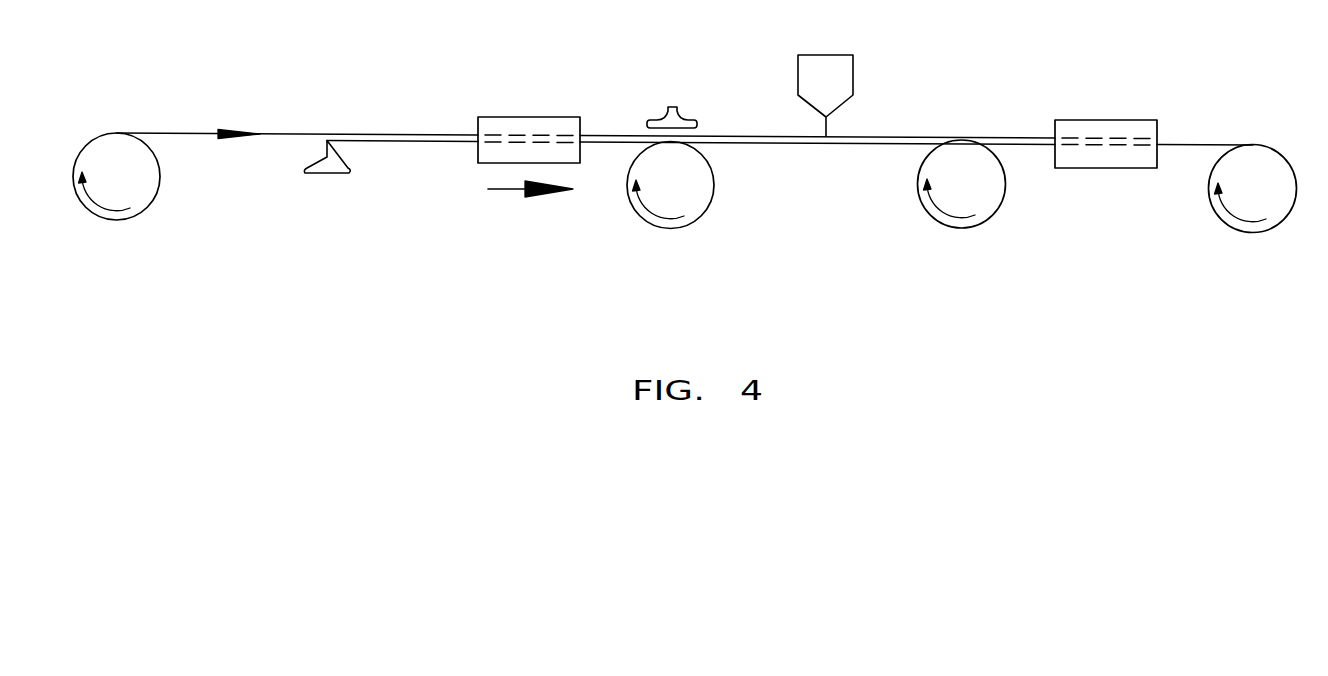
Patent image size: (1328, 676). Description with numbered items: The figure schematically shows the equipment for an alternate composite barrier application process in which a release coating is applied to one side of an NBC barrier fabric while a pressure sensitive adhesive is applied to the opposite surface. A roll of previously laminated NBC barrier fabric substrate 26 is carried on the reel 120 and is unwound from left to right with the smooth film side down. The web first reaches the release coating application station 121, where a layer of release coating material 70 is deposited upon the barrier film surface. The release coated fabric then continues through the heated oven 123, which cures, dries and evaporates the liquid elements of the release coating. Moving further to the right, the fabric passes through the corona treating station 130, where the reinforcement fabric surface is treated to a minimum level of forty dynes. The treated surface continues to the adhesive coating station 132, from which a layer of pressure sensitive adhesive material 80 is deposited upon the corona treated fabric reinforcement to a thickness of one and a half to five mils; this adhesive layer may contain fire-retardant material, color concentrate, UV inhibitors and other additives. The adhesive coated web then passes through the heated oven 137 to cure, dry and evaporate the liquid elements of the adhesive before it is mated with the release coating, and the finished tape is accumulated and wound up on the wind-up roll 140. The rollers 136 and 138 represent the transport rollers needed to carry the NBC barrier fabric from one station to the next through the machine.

The NBC barrier fabric substrate 26 is at (162, 134).
The release coating material 70 is at (390, 142).
The pressure sensitive adhesive material 80 is at (868, 137).
The reel 120 is at (115, 220).
The release coating application station 121 is at (325, 174).
The heated oven 123 is at (528, 117).
The corona treating station 130 is at (671, 107).
The adhesive coating station 132 is at (826, 55).
The roller 136 is at (670, 228).
The heated oven 137 is at (1105, 120).
The roller 138 is at (961, 228).
The wind-up roll 140 is at (1252, 232).